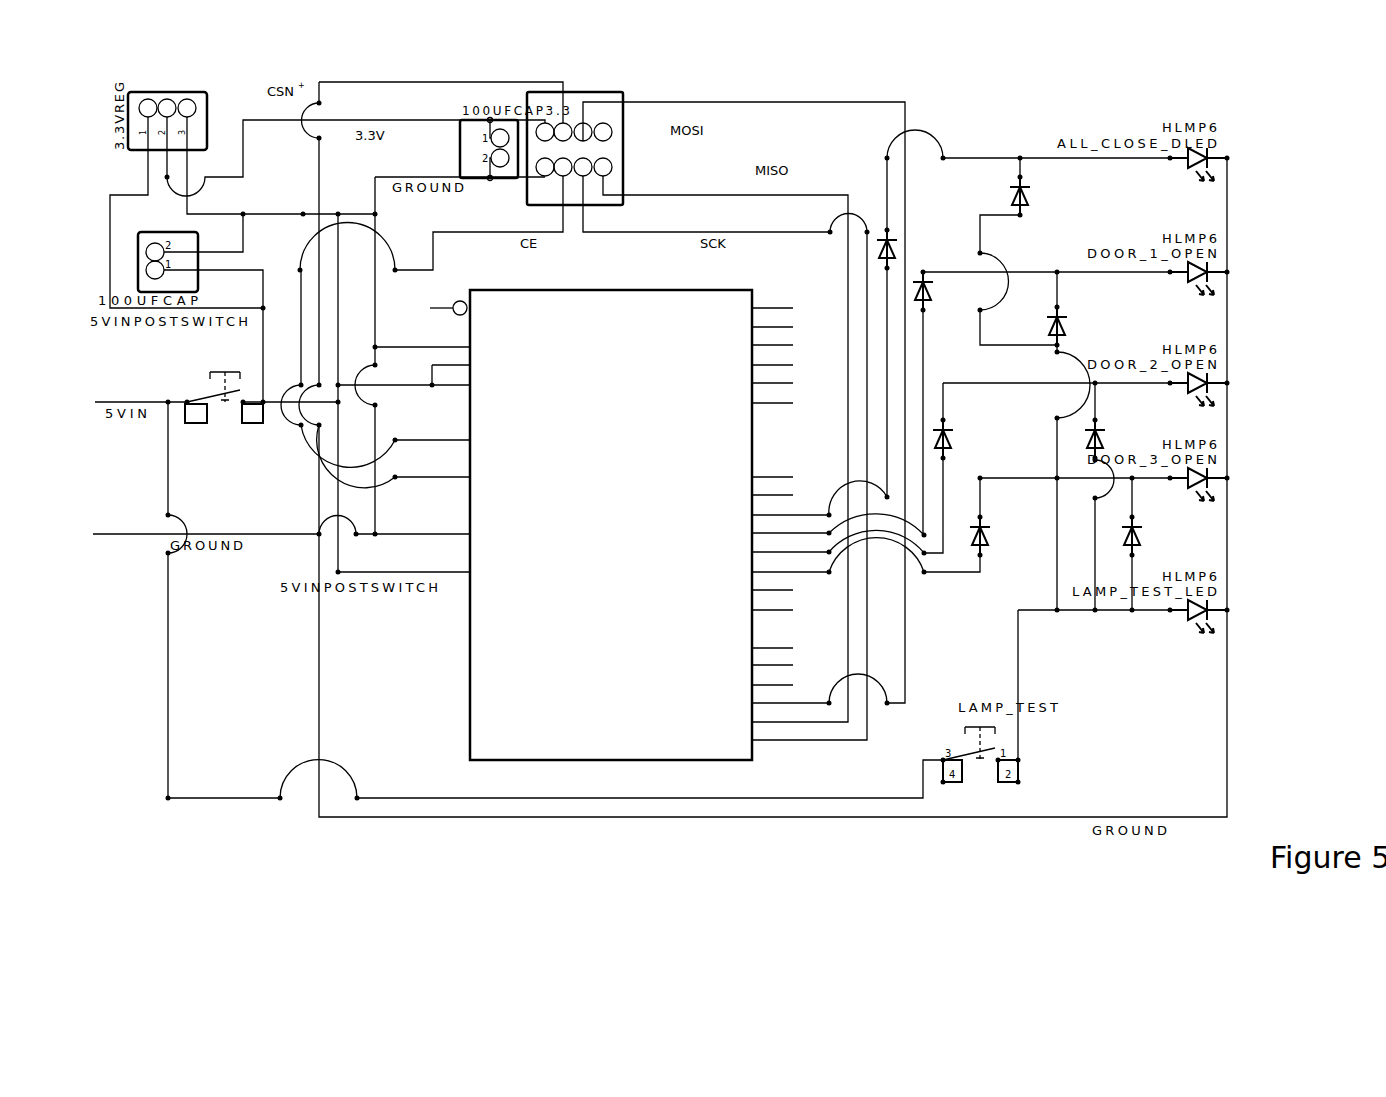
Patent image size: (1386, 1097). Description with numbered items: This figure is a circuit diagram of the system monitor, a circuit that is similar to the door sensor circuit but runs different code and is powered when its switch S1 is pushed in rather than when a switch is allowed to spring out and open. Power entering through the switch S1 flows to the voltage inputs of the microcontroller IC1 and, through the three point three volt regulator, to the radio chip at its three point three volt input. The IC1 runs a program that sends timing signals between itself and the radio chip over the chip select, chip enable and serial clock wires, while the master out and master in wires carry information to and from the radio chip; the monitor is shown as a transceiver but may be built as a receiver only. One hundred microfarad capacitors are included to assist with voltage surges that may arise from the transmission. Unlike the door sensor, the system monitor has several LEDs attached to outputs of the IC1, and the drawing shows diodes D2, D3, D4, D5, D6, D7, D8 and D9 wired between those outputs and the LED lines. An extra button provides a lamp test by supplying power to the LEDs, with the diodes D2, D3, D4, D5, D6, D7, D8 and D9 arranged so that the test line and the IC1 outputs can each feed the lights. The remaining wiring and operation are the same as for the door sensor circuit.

The IC IC1 is at (615, 524).
The switch S1 is at (224, 381).
The 1N4004 diode D2 is at (924, 269).
The 1N4004 diode D3 is at (942, 419).
The 1N4004 diode D4 is at (983, 515).
The 1N4004 diode D5 is at (1133, 515).
The 1N4004 diode D6 is at (1096, 419).
The 1N4004 diode D7 is at (1057, 305).
The 1N4004 diode D8 is at (1018, 177).
The 1N4004 diode D9 is at (887, 233).